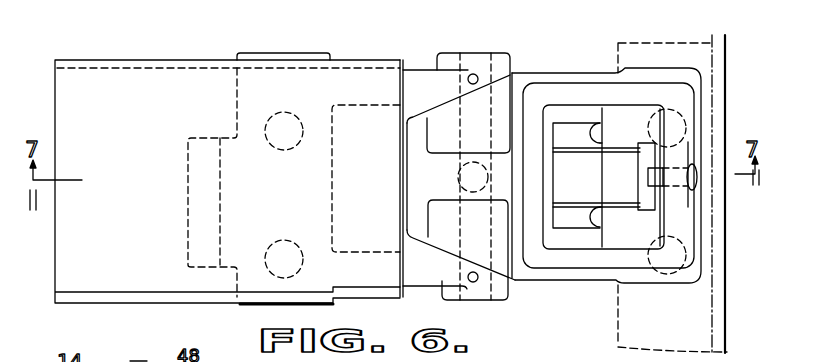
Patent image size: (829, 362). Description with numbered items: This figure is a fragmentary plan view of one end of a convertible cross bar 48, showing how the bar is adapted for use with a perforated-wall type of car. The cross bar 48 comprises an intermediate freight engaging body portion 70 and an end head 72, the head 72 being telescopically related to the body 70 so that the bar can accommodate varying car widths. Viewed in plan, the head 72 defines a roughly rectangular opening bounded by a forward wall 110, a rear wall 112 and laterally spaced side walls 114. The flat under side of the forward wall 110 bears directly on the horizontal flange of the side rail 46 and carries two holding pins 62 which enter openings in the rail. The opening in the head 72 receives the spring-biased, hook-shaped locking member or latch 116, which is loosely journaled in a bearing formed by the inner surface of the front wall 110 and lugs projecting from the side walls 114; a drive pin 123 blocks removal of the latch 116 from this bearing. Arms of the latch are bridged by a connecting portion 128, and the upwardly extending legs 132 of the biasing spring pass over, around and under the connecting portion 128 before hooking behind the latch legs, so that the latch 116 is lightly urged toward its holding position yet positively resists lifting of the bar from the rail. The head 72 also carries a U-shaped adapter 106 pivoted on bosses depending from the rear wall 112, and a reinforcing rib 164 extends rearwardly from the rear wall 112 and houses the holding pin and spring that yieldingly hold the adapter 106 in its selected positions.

The cross bar 48 is at (124, 58).
The intermediate freight engaging body portion 70 is at (205, 60).
The adapter 106 is at (417, 69).
The rear wall 112 is at (527, 190).
The reinforcing rib 164 is at (437, 162).
The end head 72 is at (548, 73).
The side walls 114 is at (612, 95).
The spring legs 132 is at (563, 143).
The connecting portion 128 is at (610, 162).
The locking member (latch) 116 is at (603, 235).
The drive pin 123 is at (665, 182).
The forward wall 110 is at (695, 142).
The holding pins 62 is at (685, 114).
The side rail 46 is at (700, 313).